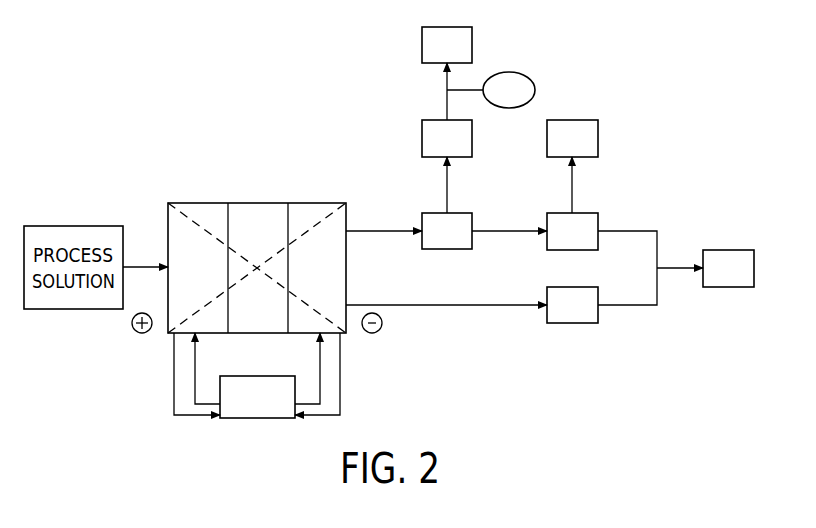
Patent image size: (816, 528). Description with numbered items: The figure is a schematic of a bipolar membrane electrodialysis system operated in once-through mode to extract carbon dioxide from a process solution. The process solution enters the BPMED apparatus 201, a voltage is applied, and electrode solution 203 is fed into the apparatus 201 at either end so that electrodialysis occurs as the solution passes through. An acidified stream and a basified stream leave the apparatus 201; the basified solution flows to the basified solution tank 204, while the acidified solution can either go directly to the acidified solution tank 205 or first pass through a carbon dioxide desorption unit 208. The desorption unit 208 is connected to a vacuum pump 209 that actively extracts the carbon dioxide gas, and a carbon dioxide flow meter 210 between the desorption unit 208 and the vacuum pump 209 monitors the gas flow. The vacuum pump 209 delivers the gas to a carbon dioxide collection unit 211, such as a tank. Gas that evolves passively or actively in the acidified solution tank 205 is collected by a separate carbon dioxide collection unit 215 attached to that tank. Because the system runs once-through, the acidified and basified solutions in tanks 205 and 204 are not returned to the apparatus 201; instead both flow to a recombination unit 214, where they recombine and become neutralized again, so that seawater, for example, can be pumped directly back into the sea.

The BPMED apparatus 201 is at (258, 212).
The electrode solution 203 is at (258, 418).
The basified solution tank 204 is at (570, 323).
The acidified solution tank 205 is at (598, 222).
The CO2 desorption unit 208 is at (422, 218).
The vacuum pump 209 is at (422, 137).
The CO2 flow meter 210 is at (535, 90).
The CO2 collection unit 211 is at (422, 43).
The recombination unit 214 is at (728, 287).
The CO2 collection unit 215 is at (598, 137).